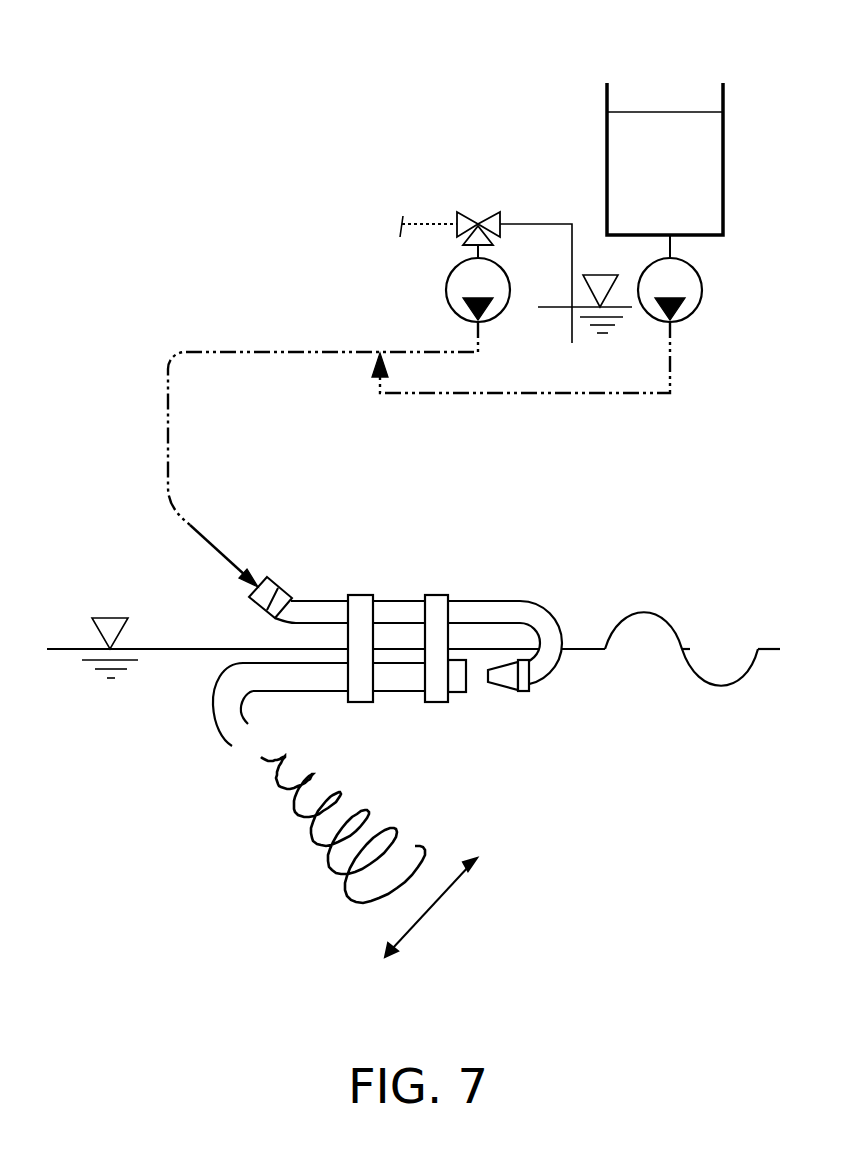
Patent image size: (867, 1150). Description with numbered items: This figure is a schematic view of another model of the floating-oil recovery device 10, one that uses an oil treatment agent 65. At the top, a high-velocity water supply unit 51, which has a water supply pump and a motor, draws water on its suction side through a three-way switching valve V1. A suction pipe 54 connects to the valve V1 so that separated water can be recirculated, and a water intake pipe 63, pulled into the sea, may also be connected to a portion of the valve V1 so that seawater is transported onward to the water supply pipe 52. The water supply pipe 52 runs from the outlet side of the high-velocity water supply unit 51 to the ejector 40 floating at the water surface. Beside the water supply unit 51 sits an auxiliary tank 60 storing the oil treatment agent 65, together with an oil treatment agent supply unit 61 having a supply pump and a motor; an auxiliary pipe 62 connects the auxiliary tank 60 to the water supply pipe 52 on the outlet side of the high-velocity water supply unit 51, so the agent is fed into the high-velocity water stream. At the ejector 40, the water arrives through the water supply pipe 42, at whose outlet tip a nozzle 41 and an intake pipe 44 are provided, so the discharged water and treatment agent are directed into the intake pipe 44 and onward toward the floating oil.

The floating-oil recovery device 10 is at (385, 72).
The ejector 40 is at (404, 637).
The nozzle 41 is at (503, 692).
The water supply pipe 42 is at (547, 603).
The intake pipe 44 is at (300, 693).
The high-velocity water supply unit 51 is at (447, 290).
The water supply pipe 52 is at (245, 353).
The suction pipe 54 is at (417, 223).
The three-way switching valve V1 is at (477, 212).
The auxiliary tank 60 is at (723, 157).
The oil treatment agent supply unit 61 is at (702, 287).
The auxiliary pipe 62 is at (498, 393).
The water intake pipe 63 is at (545, 220).
The oil treatment agent 65 is at (650, 152).